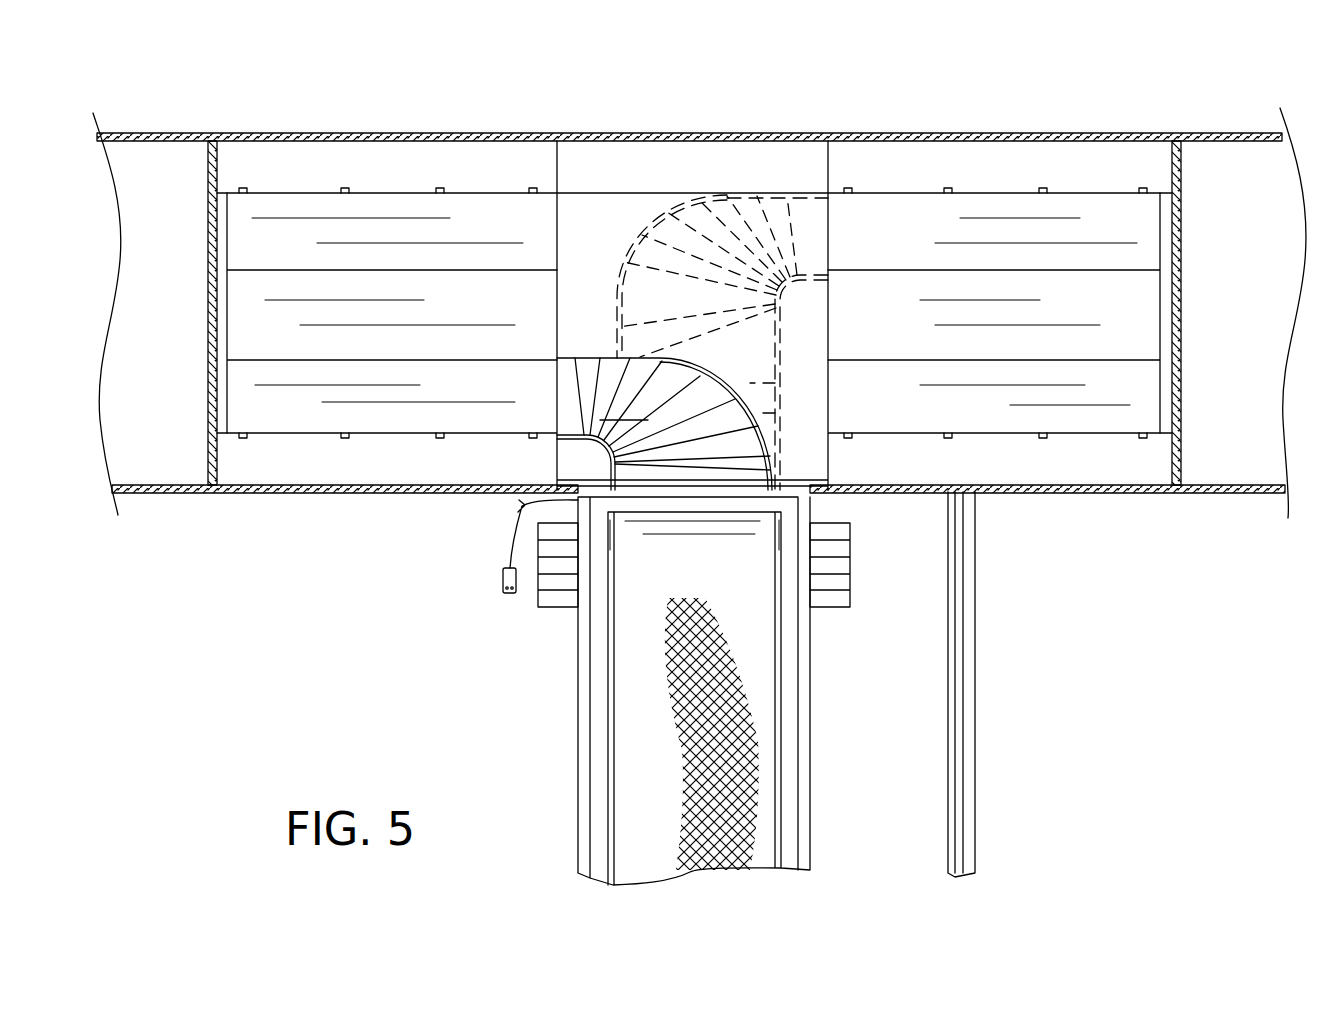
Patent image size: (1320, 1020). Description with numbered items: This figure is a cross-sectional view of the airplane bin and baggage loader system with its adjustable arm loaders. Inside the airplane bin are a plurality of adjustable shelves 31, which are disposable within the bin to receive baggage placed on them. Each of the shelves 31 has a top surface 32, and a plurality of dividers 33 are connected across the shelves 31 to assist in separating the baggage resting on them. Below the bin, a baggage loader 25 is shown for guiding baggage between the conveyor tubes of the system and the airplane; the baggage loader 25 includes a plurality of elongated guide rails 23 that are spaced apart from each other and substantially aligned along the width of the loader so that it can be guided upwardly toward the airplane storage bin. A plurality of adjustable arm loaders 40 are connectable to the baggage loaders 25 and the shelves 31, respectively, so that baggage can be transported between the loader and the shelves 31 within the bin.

The elongated guide rails 23 is at (577, 720).
The baggage loaders 25 is at (645, 795).
The adjustable shelves 31 is at (286, 385).
The top surface 32 is at (467, 358).
The dividers 33 is at (350, 188).
The adjustable arm loaders 40 is at (676, 238).